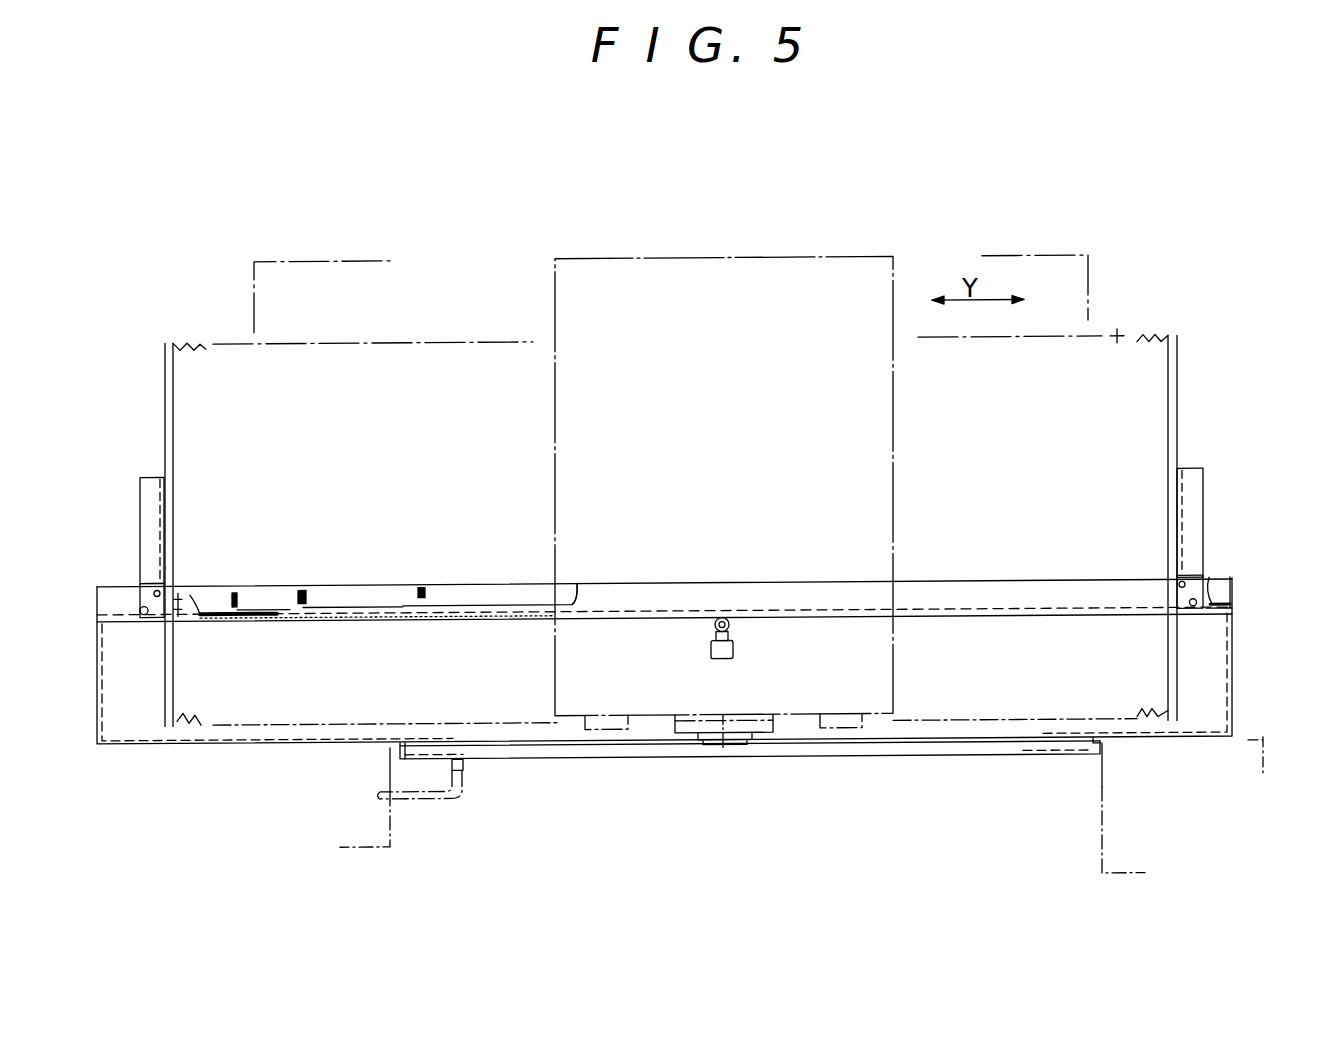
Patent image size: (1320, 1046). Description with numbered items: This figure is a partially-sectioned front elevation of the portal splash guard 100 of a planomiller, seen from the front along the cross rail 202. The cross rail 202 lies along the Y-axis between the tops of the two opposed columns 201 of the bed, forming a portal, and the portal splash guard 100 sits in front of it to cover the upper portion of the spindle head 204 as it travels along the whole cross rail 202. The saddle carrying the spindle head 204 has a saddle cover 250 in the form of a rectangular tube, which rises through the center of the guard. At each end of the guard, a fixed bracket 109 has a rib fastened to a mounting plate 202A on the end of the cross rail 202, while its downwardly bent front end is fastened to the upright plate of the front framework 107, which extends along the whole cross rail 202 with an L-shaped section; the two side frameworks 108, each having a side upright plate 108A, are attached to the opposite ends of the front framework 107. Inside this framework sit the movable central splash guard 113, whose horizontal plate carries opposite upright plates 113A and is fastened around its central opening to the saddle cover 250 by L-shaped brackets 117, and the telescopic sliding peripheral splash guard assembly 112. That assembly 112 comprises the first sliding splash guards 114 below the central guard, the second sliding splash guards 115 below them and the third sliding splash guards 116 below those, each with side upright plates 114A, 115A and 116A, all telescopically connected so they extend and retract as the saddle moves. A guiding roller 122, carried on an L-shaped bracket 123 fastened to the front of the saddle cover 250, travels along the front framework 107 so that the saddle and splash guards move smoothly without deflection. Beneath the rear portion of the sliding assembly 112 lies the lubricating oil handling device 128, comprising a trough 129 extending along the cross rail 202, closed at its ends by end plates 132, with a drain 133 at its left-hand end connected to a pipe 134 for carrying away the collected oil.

The portal splash guard 100 is at (1236, 427).
The front framework 107 is at (987, 602).
The side framework 108 is at (97, 601).
The side upright plate 108A is at (1230, 585).
The fixed bracket 109 is at (149, 480).
The telescopic sliding peripheral splash guard assembly 112 is at (308, 590).
The movable central splash guard 113 is at (505, 616).
The upright plate 113A is at (422, 585).
The first sliding splash guard 114 is at (402, 605).
The side upright plate 114A is at (300, 586).
The second sliding splash guard 115 is at (282, 617).
The side upright plate 115A is at (233, 587).
The third sliding splash guard 116 is at (252, 617).
The side upright plate 116A is at (182, 590).
The L-shaped bracket 117 is at (544, 577).
The guiding roller 122 is at (710, 629).
The L-shaped bracket 123 is at (737, 648).
The lubricating oil handling device 128 is at (808, 763).
The trough 129 is at (945, 752).
The end plate 132 is at (391, 747).
The drain 133 is at (465, 764).
The pipe 134 is at (432, 800).
The column 201 is at (1255, 731).
The cross rail 202 is at (1118, 323).
The mounting plate 202A is at (1173, 339).
The spindle head 204 is at (675, 744).
The saddle cover 250 is at (745, 258).